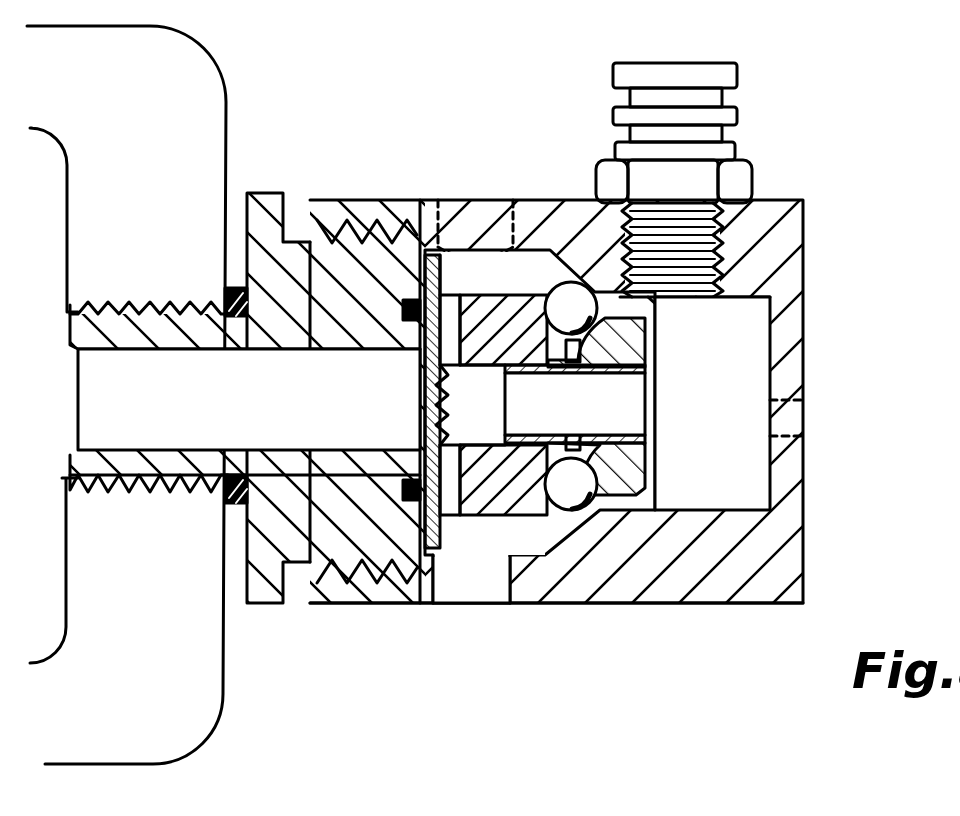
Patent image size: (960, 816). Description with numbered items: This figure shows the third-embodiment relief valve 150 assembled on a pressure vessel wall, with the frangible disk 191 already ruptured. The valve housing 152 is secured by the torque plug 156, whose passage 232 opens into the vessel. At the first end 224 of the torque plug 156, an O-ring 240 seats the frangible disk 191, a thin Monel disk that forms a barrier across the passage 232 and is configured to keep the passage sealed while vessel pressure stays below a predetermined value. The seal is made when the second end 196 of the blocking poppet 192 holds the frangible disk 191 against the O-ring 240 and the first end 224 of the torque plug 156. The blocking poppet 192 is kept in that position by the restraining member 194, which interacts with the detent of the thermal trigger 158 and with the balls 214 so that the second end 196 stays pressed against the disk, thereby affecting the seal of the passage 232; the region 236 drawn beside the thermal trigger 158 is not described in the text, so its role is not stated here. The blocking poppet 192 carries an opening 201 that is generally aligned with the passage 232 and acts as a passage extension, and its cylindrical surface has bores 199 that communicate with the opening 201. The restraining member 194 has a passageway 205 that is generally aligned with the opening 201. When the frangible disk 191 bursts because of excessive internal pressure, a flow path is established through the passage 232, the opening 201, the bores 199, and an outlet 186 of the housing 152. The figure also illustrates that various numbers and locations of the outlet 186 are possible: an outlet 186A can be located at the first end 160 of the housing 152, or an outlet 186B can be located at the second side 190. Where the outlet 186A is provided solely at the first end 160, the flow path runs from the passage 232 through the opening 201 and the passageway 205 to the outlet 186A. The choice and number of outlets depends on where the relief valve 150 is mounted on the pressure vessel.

The relief valve 150 is at (512, 655).
The valve housing 152 is at (812, 548).
The torque plug 156 is at (262, 608).
The thermal trigger 158 is at (772, 120).
The first end 160 is at (806, 470).
The outlet 186 is at (497, 592).
The outlet 186A is at (806, 400).
The outlet 186B is at (500, 200).
The second side 190 is at (800, 200).
The frangible disk 191 is at (445, 265).
The blocking poppet 192 is at (553, 520).
The restraining member 194 is at (660, 492).
The second end 196 is at (418, 500).
The bores 199 is at (465, 302).
The opening 201 is at (492, 414).
The passageway 205 is at (600, 414).
The balls 214 is at (573, 280).
The first end 224 is at (445, 565).
The passage 232 is at (300, 428).
The chamber 236 is at (678, 310).
The O-ring 240 is at (404, 322).